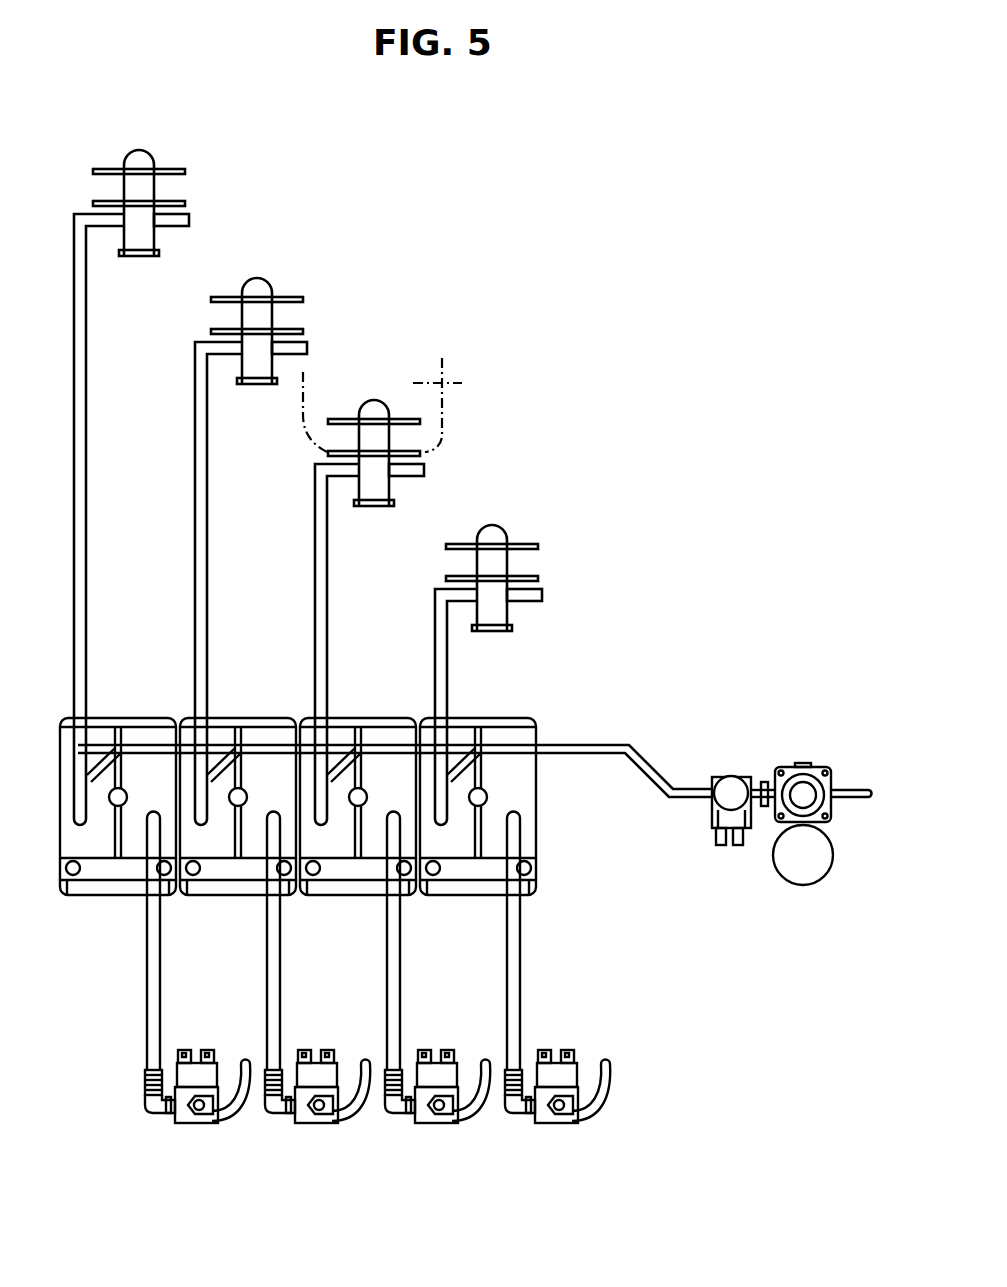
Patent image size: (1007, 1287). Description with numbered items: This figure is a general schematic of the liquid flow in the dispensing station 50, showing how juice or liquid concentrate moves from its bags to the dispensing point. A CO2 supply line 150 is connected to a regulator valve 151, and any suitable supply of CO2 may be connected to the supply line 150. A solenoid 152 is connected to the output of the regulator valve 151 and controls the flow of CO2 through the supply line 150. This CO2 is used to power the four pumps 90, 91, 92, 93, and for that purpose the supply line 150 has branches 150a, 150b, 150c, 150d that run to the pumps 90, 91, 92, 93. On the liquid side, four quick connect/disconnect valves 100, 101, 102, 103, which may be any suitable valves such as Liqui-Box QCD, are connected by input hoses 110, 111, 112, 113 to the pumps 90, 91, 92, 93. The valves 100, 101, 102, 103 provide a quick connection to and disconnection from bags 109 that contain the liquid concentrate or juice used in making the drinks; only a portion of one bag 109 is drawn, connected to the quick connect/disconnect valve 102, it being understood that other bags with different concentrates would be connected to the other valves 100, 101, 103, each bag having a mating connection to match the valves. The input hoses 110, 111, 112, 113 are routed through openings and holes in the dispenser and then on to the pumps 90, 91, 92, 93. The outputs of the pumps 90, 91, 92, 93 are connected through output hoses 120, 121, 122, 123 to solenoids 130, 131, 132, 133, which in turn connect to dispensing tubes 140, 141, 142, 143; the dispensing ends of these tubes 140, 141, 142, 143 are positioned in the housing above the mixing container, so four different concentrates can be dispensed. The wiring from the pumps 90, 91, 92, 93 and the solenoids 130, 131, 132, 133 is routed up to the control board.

The fuel supply system 50 is at (777, 732).
The pump 90 is at (150, 733).
The pump 91 is at (270, 735).
The pump 92 is at (392, 735).
The pump 93 is at (510, 735).
The quick connect/disconnect valve 100 is at (152, 242).
The quick connect/disconnect valve 101 is at (285, 354).
The quick connect/disconnect valve 102 is at (400, 436).
The quick connect/disconnect valve 103 is at (517, 578).
The bag 109 is at (405, 405).
The input hose 110 is at (74, 415).
The input hose 111 is at (195, 437).
The input hose 112 is at (315, 490).
The input hose 113 is at (435, 642).
The output hose 120 is at (147, 930).
The output hose 121 is at (267, 930).
The output hose 122 is at (387, 930).
The output hose 123 is at (507, 930).
The solenoid 130 is at (195, 1070).
The solenoid 131 is at (315, 1070).
The solenoid 132 is at (435, 1070).
The solenoid 133 is at (553, 1070).
The dispensing tube 140 is at (240, 1062).
The dispensing tube 141 is at (360, 1062).
The dispensing tube 142 is at (480, 1062).
The dispensing tube 143 is at (600, 1062).
The CO2 supply line 150 is at (590, 745).
The branch 150a is at (102, 745).
The branch 150b is at (222, 745).
The branch 150c is at (340, 745).
The branch 150d is at (458, 745).
The regulator valve 151 is at (830, 770).
The solenoid 152 is at (713, 778).